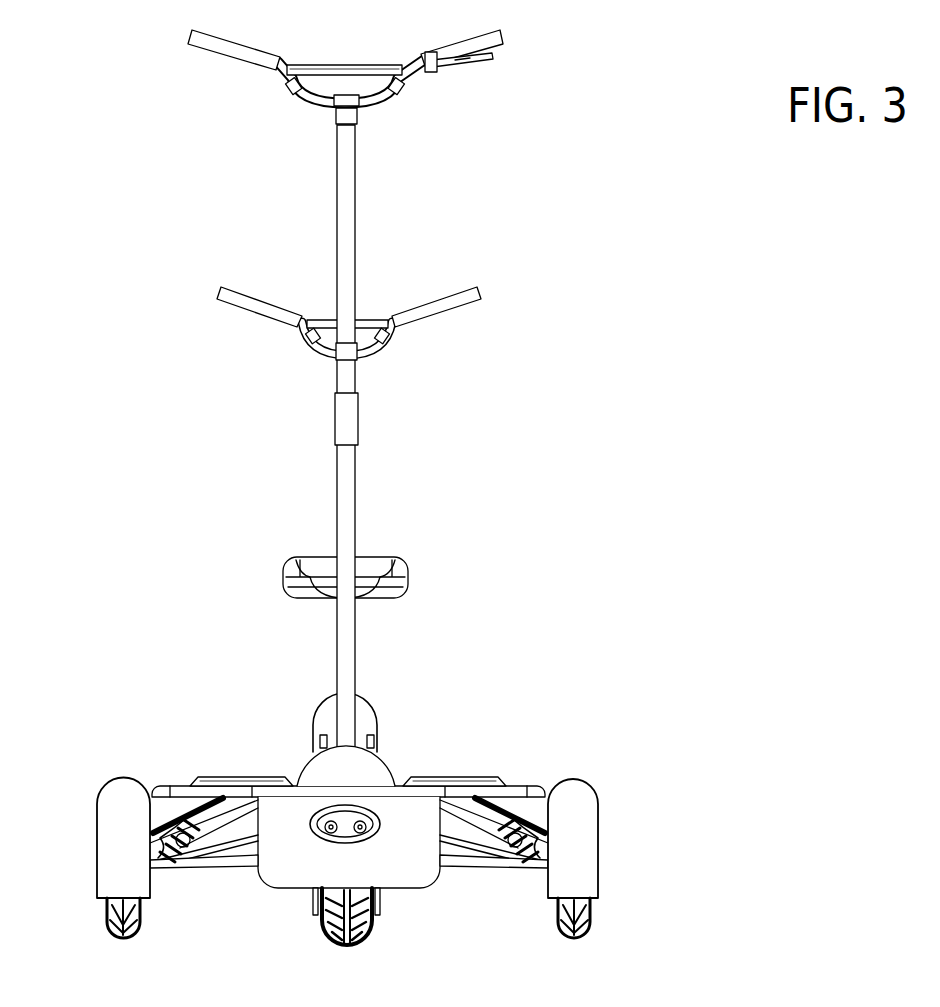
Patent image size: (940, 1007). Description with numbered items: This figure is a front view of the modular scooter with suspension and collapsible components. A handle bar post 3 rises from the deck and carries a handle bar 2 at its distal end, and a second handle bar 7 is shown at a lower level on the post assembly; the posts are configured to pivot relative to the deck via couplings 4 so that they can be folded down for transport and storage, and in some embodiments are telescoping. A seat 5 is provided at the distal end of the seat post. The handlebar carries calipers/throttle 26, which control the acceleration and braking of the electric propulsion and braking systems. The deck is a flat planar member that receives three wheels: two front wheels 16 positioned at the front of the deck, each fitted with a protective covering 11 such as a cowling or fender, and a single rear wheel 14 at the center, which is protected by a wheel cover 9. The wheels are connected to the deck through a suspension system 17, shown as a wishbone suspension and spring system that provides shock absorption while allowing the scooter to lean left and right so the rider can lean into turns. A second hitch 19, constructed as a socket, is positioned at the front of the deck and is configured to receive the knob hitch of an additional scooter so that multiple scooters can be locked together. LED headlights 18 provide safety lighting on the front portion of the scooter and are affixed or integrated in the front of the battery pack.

The handle bar 2 is at (505, 40).
The calipers/throttle 26 is at (494, 58).
The handle bar post 3 is at (355, 193).
The handle bar 7 is at (480, 301).
The seat 5 is at (408, 565).
The wheel cover 9 is at (378, 703).
The coupling 4 is at (376, 744).
The second hitch 19 is at (304, 764).
The LED headlights 18 is at (345, 866).
The suspension system 17 is at (478, 868).
The rear wheel 14 is at (372, 935).
The protective covering 11 is at (600, 830).
The front wheels 16 is at (592, 912).